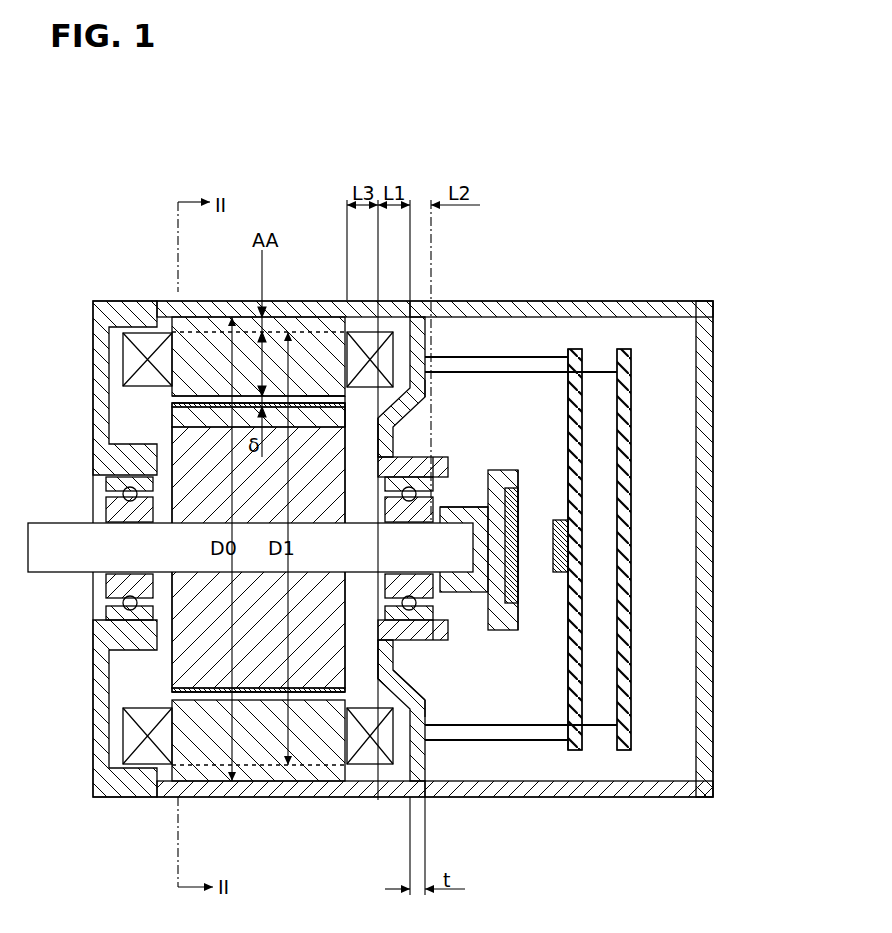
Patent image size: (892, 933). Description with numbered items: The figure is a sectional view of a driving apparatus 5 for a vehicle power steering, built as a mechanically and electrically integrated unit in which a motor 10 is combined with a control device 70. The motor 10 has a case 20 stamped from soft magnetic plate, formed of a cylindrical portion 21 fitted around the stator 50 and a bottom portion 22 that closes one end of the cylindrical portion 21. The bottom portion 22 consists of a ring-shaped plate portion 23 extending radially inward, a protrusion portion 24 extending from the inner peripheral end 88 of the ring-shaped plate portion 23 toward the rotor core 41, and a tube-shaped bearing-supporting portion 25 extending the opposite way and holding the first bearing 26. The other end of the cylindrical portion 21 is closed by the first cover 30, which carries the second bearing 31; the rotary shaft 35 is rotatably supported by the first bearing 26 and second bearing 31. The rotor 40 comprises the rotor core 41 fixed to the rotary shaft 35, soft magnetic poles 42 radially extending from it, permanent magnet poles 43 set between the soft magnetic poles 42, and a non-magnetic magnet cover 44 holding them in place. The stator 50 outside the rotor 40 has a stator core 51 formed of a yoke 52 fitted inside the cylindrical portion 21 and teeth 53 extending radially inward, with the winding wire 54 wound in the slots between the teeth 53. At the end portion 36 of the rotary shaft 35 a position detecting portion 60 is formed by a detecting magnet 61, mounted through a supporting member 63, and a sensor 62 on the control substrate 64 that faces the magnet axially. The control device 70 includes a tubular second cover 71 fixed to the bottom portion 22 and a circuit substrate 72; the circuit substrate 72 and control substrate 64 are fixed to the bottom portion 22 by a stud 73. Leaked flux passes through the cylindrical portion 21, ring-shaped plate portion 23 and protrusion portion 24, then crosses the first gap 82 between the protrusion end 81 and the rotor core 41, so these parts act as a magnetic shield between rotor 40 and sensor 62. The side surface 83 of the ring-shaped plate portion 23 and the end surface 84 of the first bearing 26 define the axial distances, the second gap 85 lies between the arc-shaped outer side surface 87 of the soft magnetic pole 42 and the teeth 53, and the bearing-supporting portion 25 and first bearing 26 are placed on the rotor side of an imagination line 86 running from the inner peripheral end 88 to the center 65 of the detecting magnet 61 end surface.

The driving apparatus 5 is at (588, 485).
The motor 10 is at (155, 290).
The case 20 is at (195, 799).
The cylindrical portion 21 is at (257, 799).
The bottom portion 22 is at (427, 757).
The ring-shaped plate portion 23 is at (379, 799).
The protrusion portion 24 is at (380, 650).
The bearing-supporting portion 25 is at (430, 635).
The first bearing 26 is at (440, 690).
The first cover 30 is at (100, 717).
The second bearing 31 is at (108, 612).
The rotary shaft 35 is at (65, 566).
The end portion 36 is at (412, 607).
The rotor 40 is at (187, 637).
The rotor core 41 is at (112, 462).
The soft magnetic pole 42 is at (177, 678).
The magnet pole 43 is at (178, 424).
The magnet cover 44 is at (178, 409).
The stator 50 is at (101, 319).
The stator core 51 is at (221, 308).
The yoke 52 is at (199, 314).
The teeth 53 is at (178, 397).
The winding wire 54 is at (142, 342).
The position detecting portion 60 is at (538, 493).
The detecting magnet 61 is at (513, 468).
The sensor 62 is at (557, 520).
The supporting member 63 is at (508, 628).
The control substrate 64 is at (571, 348).
The center of an end surface of the detecting magnet 65 is at (519, 548).
The control device 70 is at (580, 520).
The second cover 71 is at (705, 530).
The circuit substrate 72 is at (625, 348).
The stud 73 is at (595, 367).
The protrusion end 81 is at (313, 393).
The first gap 82 is at (325, 415).
The side surface 83 is at (362, 443).
The end surface 84 is at (488, 473).
The second gap 85 is at (178, 404).
The imagination line 86 is at (463, 500).
The outer side surface 87 is at (302, 692).
The inner peripheral end 88 is at (427, 395).